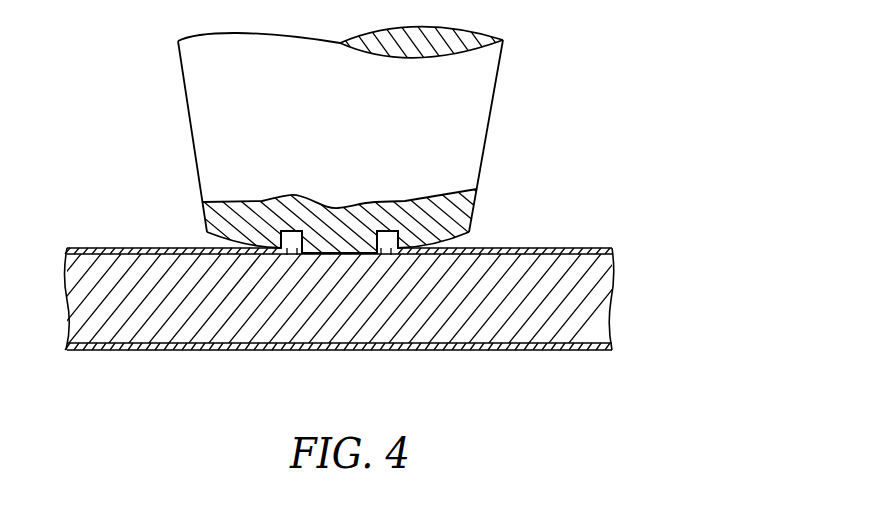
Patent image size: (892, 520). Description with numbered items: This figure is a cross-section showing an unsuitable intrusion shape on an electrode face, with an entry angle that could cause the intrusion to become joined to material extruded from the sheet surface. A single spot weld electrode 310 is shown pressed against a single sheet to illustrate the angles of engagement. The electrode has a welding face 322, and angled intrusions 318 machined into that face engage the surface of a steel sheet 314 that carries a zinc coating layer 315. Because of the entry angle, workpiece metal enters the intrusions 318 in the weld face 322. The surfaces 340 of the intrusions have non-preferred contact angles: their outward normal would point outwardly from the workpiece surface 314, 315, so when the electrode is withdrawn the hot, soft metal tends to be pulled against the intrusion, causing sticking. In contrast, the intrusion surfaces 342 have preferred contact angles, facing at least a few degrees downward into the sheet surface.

The spot weld electrode 310 is at (373, 116).
The steel sheet 314 is at (593, 303).
The zinc coating layer 315 is at (527, 248).
The intrusions 318 is at (337, 253).
The welding face 322 is at (340, 255).
The surfaces of intrusions 340 is at (357, 240).
The intrusion surfaces 342 is at (281, 238).